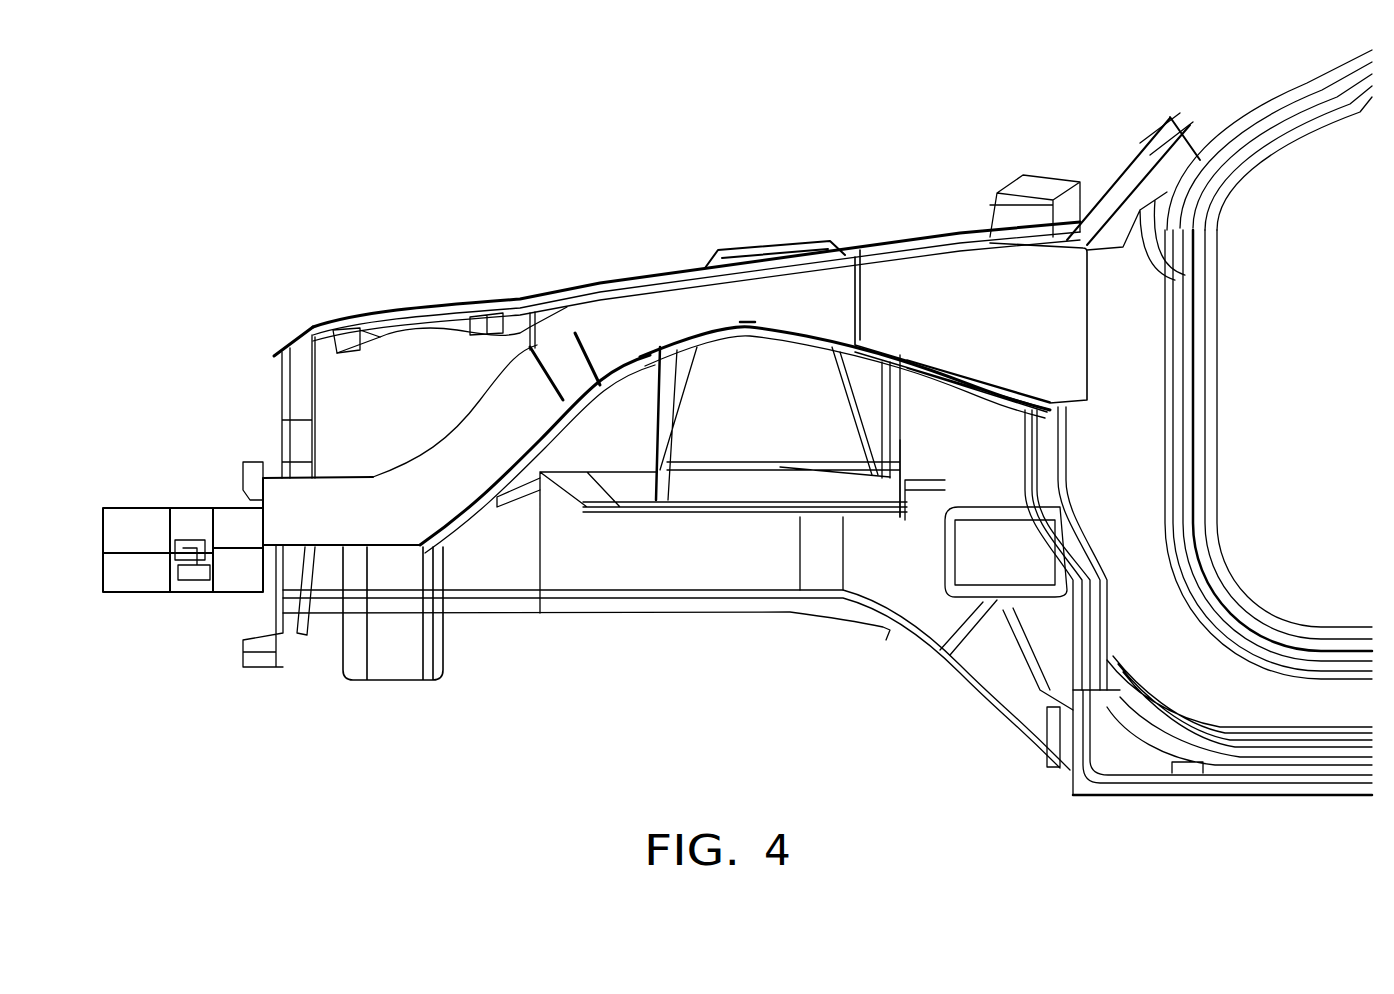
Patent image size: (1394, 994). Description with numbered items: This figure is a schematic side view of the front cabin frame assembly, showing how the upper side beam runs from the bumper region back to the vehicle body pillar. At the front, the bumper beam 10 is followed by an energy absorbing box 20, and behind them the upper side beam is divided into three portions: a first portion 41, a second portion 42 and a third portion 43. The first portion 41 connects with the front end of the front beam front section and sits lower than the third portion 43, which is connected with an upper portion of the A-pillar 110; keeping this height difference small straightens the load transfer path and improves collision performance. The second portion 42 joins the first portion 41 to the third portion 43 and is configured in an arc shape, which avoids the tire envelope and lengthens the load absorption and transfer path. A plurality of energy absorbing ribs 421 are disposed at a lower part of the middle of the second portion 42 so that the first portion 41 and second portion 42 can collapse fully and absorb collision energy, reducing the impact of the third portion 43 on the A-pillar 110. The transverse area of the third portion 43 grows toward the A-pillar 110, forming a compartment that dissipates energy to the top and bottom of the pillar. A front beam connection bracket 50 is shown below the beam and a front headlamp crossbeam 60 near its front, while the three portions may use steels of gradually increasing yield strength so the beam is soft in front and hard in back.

The bumper beam 10 is at (137, 525).
The energy absorbing box 20 is at (233, 525).
The first portion 41 is at (453, 497).
The second portion 42 is at (620, 328).
The energy absorbing ribs 421 is at (750, 330).
The third portion 43 is at (915, 295).
The front beam connection bracket 50 is at (397, 640).
The front headlamp crossbeam 60 is at (383, 328).
The A-pillar 110 is at (1125, 280).